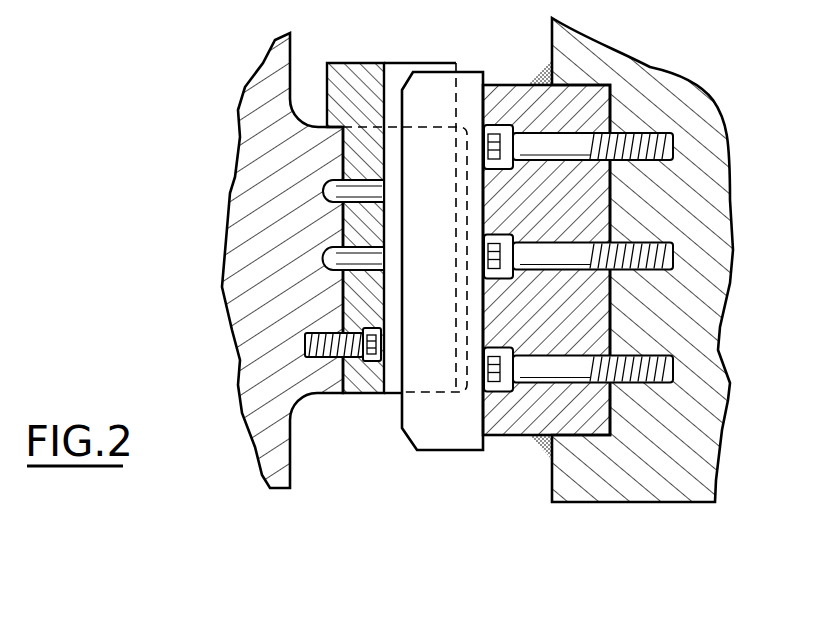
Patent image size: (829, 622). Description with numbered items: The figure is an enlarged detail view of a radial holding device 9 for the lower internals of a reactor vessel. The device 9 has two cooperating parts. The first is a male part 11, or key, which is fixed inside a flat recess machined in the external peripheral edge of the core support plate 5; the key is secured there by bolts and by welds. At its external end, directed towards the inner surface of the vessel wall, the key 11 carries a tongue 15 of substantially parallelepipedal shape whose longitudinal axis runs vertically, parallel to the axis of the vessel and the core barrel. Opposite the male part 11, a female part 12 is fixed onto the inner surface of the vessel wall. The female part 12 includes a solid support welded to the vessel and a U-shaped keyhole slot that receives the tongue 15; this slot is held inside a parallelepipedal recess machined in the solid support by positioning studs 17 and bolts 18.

The core support plate 5 is at (727, 197).
The radial holding device 9 is at (604, 517).
The male part 11 is at (505, 420).
The female part 12 is at (353, 73).
The tongue 15 is at (435, 433).
The positioning studs 17 is at (323, 258).
The bolts 18 is at (305, 345).